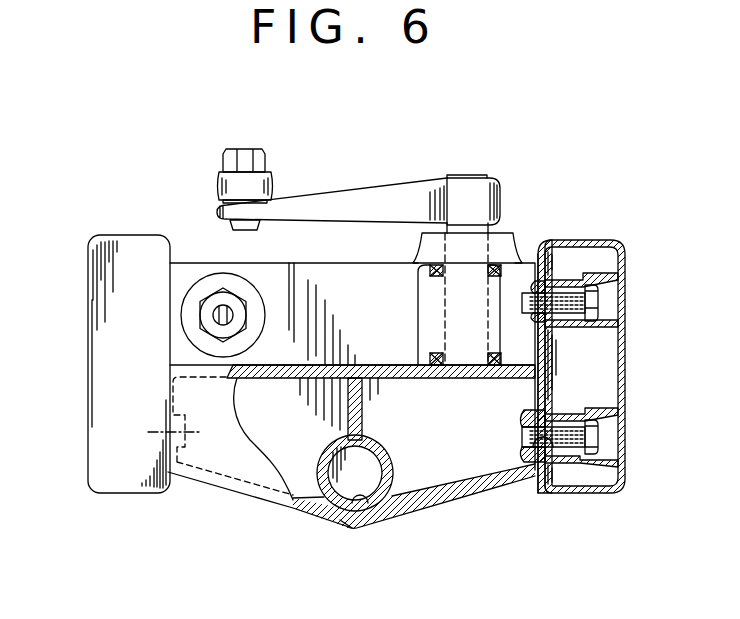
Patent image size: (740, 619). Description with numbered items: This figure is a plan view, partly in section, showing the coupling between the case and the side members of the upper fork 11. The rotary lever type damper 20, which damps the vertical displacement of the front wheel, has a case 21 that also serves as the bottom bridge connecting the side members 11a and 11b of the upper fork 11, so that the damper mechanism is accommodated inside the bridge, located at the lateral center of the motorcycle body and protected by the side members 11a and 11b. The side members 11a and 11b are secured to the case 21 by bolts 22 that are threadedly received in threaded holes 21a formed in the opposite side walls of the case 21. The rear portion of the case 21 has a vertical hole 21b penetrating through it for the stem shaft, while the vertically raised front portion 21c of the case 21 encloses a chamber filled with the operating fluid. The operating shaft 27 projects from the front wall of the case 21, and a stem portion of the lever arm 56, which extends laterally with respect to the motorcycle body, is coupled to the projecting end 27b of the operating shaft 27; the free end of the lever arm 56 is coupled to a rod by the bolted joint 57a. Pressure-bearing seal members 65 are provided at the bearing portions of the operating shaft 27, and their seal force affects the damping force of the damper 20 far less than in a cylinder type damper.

The upper fork 11 is at (93, 452).
The side member 11a is at (98, 368).
The side member 11b is at (625, 383).
The rotary lever type damper 20 is at (420, 518).
The damper case 21 is at (273, 490).
The threaded holes 21a is at (548, 493).
The vertical hole 21b is at (363, 524).
The raised front portion 21c is at (188, 270).
The bolts 22 is at (598, 298).
The operating shaft 27 is at (418, 297).
The projecting end 27b is at (467, 175).
The lever arm 56 is at (378, 198).
The bolted joint 57a is at (217, 188).
The pressure-bearing seal members 65 is at (518, 262).